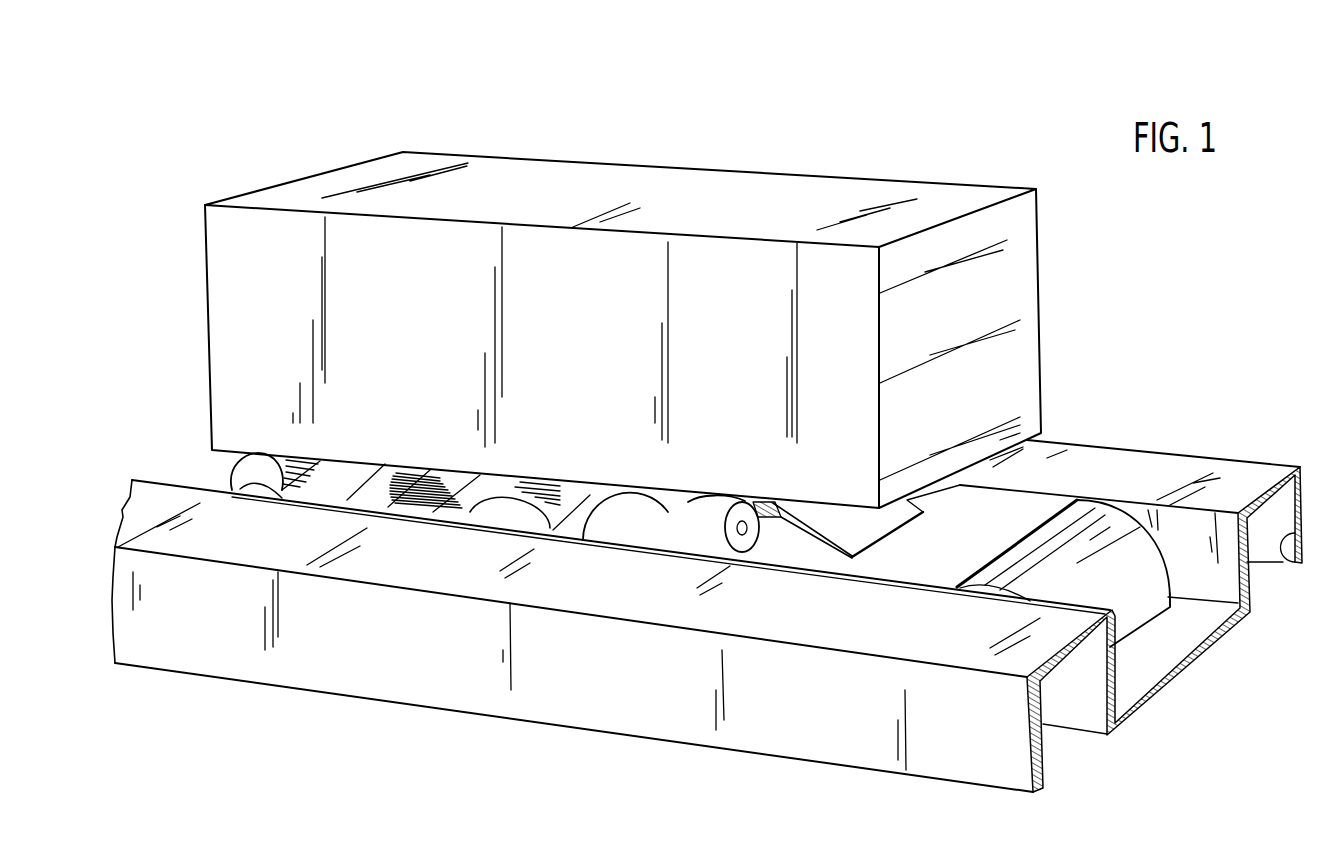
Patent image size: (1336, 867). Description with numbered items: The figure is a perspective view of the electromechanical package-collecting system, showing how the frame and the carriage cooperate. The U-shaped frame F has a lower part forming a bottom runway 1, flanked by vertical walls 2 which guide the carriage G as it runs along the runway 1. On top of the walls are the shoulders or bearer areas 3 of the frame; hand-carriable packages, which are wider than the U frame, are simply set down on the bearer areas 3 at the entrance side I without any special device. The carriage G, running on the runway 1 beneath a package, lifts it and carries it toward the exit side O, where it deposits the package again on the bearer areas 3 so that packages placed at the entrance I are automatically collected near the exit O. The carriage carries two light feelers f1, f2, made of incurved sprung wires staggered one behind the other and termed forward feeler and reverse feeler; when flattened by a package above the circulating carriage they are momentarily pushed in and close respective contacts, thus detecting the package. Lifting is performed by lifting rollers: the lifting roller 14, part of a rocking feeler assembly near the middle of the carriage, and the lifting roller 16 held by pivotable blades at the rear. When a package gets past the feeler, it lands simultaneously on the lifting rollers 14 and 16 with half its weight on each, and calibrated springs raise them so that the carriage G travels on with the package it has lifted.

The bottom runway 1 is at (1178, 638).
The vertical walls 2 is at (1288, 565).
The bearer areas 3 is at (1212, 483).
The lifting roller 14 is at (752, 502).
The lifting roller 16 is at (230, 463).
The U-shaped frame F is at (445, 693).
The carriage G is at (1062, 506).
The entrance I is at (113, 435).
The exit O is at (1235, 774).
The forward feeler f1 is at (590, 492).
The reverse feeler f2 is at (690, 502).